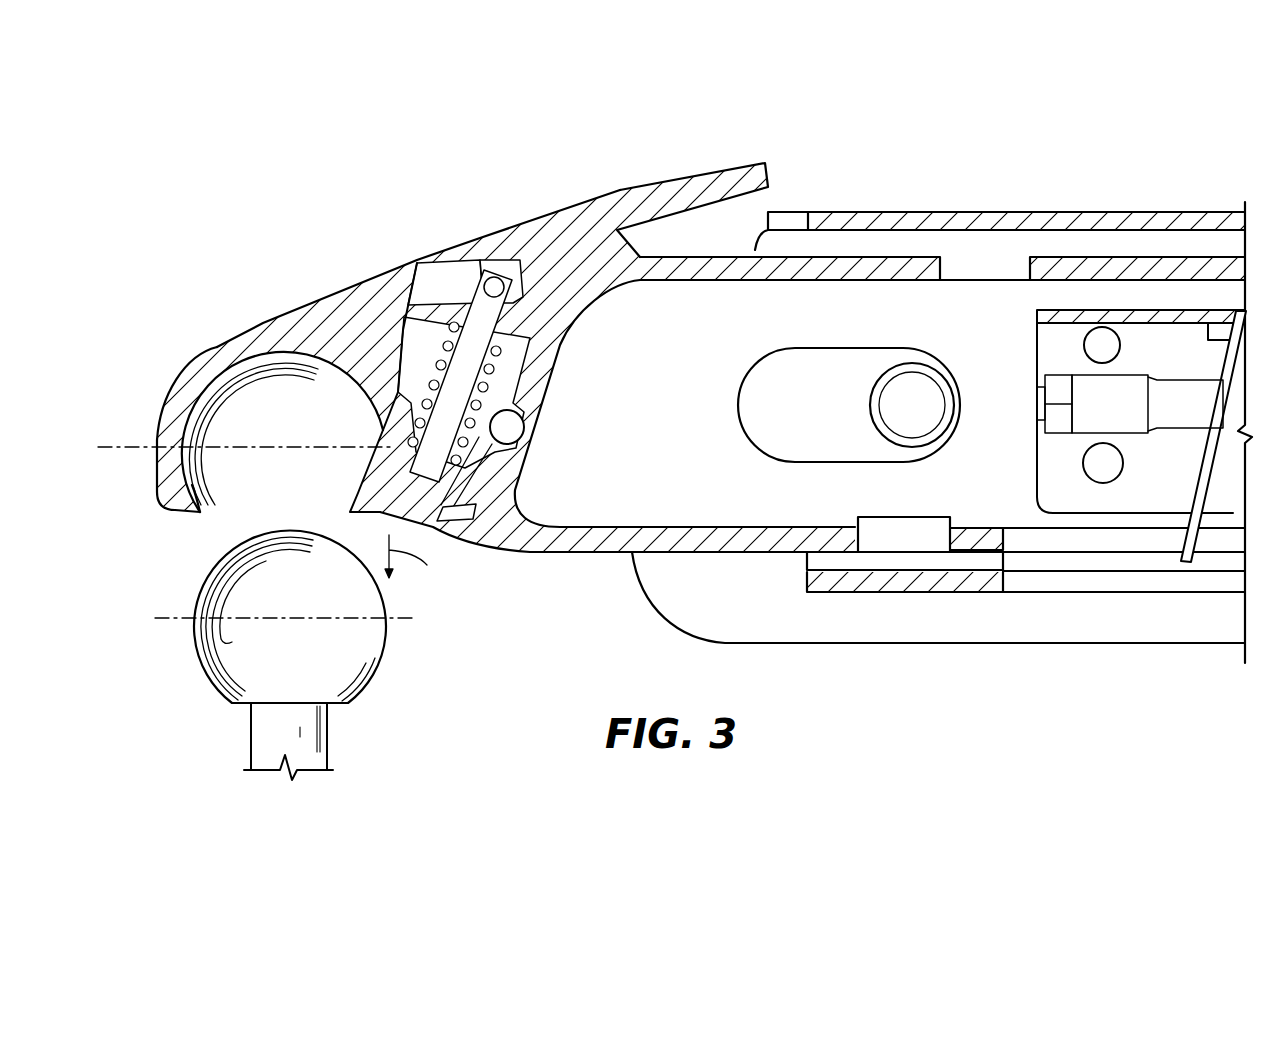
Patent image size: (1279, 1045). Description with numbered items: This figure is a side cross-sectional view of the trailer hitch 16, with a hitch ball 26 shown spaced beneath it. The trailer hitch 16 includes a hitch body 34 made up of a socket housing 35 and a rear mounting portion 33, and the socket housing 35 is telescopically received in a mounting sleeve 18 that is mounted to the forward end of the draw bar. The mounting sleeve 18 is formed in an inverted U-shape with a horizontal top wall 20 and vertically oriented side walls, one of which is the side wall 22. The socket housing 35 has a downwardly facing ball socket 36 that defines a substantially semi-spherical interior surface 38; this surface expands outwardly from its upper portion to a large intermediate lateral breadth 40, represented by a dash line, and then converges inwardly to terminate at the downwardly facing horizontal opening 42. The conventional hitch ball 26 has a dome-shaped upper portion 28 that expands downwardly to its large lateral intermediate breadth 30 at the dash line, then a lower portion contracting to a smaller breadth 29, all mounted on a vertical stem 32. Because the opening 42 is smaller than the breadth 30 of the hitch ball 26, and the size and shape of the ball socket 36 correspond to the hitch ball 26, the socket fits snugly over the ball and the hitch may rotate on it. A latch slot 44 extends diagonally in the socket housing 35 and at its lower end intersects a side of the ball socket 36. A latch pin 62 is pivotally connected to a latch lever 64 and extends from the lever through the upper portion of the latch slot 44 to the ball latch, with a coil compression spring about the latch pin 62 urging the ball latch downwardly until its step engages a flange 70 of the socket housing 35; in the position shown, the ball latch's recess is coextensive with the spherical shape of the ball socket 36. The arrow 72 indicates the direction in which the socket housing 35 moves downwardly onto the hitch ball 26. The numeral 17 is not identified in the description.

The trailer hitch 16 is at (282, 277).
The housing wall portion 17 is at (357, 293).
The mounting sleeve 18 is at (1110, 212).
The horizontal top wall 20 is at (1100, 343).
The side wall 22 is at (680, 635).
The hitch ball 26 is at (388, 608).
The dome-shaped upper portion 28 is at (217, 568).
The smaller breadth 29 is at (373, 680).
The large lateral intermediate breadth 30 is at (215, 620).
The vertical stem 32 is at (262, 733).
The rear mounting portion 33 is at (623, 553).
The hitch body 34 is at (263, 323).
The socket housing 35 is at (190, 368).
The ball socket 36 is at (304, 410).
The semi-spherical interior surface 38 is at (205, 395).
The large intermediate lateral breadth 40 is at (118, 447).
The horizontal opening 42 is at (205, 512).
The latch slot 44 is at (523, 547).
The latch pin 62 is at (460, 290).
The latch lever 64 is at (653, 183).
The flange 70 is at (452, 545).
The arrow 72 is at (412, 566).